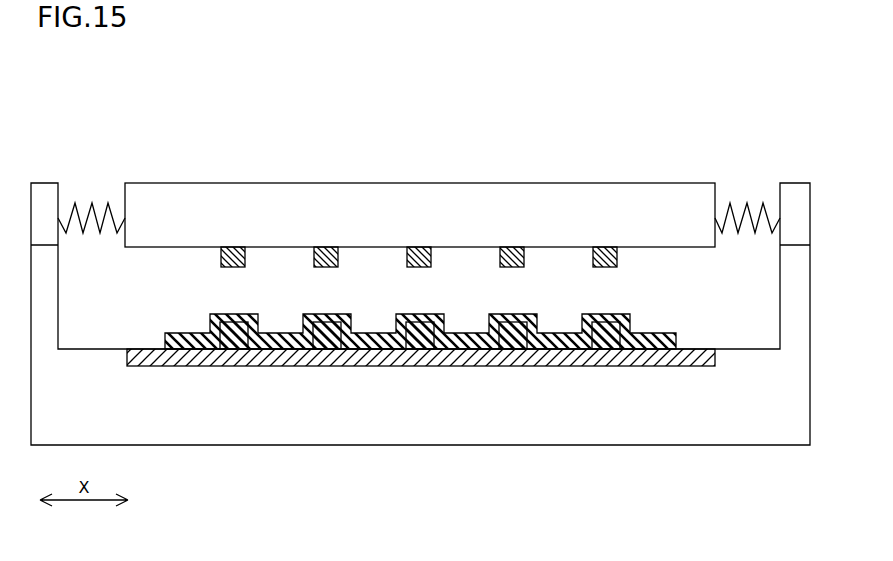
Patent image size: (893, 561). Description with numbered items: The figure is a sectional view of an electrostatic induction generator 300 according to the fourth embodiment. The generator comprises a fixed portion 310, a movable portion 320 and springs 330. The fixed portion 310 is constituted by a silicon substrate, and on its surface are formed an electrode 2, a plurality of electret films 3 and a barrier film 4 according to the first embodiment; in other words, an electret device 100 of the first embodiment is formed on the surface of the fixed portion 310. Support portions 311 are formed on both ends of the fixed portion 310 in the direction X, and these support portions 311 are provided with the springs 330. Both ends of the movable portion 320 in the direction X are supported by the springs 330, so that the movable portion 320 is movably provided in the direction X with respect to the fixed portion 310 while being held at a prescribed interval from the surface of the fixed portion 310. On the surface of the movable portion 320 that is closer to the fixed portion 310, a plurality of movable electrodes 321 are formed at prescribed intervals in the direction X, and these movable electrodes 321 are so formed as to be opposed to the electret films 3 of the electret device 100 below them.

The electrostatic induction generator 300 is at (405, 45).
The fixed portion 310 is at (781, 408).
The support portions 311 is at (42, 216).
The movable portion 320 is at (680, 220).
The movable electrodes 321 is at (231, 265).
The springs 330 is at (103, 213).
The electret device 100 is at (216, 300).
The electrode 2 is at (697, 362).
The electret films 3 is at (228, 335).
The barrier film 4 is at (197, 340).